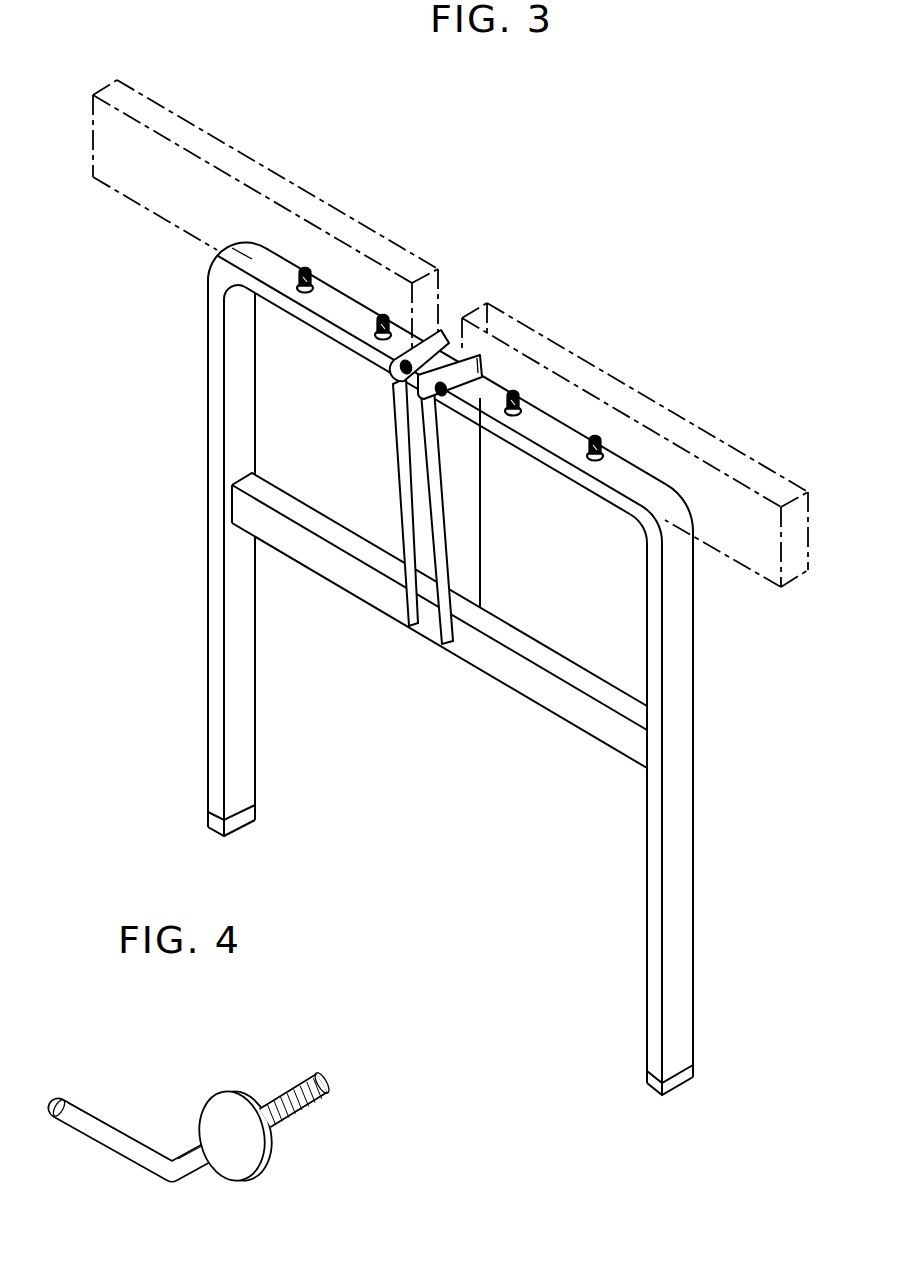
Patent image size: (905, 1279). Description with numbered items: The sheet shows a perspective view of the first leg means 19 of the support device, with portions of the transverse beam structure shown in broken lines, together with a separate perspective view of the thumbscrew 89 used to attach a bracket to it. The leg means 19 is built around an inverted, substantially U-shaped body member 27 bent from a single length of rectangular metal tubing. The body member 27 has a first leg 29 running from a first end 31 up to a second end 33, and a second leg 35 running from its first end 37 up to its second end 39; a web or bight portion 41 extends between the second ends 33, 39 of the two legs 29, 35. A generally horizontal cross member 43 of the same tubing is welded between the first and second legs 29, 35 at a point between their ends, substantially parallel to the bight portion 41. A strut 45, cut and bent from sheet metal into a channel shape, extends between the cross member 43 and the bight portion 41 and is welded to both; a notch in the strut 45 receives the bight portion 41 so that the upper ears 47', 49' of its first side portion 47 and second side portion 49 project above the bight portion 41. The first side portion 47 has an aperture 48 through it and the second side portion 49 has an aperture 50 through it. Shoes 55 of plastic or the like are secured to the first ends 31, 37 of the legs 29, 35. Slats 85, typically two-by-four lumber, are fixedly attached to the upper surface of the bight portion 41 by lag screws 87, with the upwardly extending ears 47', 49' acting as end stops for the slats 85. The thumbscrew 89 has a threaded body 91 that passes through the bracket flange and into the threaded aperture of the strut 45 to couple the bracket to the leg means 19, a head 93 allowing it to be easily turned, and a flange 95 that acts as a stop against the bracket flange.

In FIG. 3, the first leg means 19 is at (686, 166).
In FIG. 3, the body member 27 is at (708, 875).
In FIG. 3, the first leg 29 is at (680, 748).
In FIG. 3, the first end 31 is at (690, 1030).
In FIG. 3, the second end 33 is at (680, 590).
In FIG. 3, the second leg 35 is at (208, 613).
In FIG. 3, the first end 37 is at (238, 743).
In FIG. 3, the second end 39 is at (218, 312).
In FIG. 3, the bight portion 41 is at (376, 326).
In FIG. 3, the cross member 43 is at (500, 667).
In FIG. 3, the strut 45 is at (493, 603).
In FIG. 3, the first side portion 47 is at (483, 516).
In FIG. 3, the ear 47' is at (468, 325).
In FIG. 3, the aperture 48 is at (483, 366).
In FIG. 3, the second side portion 49 is at (371, 502).
In FIG. 3, the ear 49' is at (431, 301).
In FIG. 3, the aperture 50 is at (403, 378).
In FIG. 3, the shoes 55 is at (236, 822).
In FIG. 3, the slats 85 is at (267, 183).
In FIG. 3, the lag screws 87 is at (311, 292).
In FIG. 4, the thumbscrew 89 is at (180, 1090).
In FIG. 4, the threaded body 91 is at (332, 1088).
In FIG. 4, the head 93 is at (110, 1135).
In FIG. 4, the flange 95 is at (262, 1158).